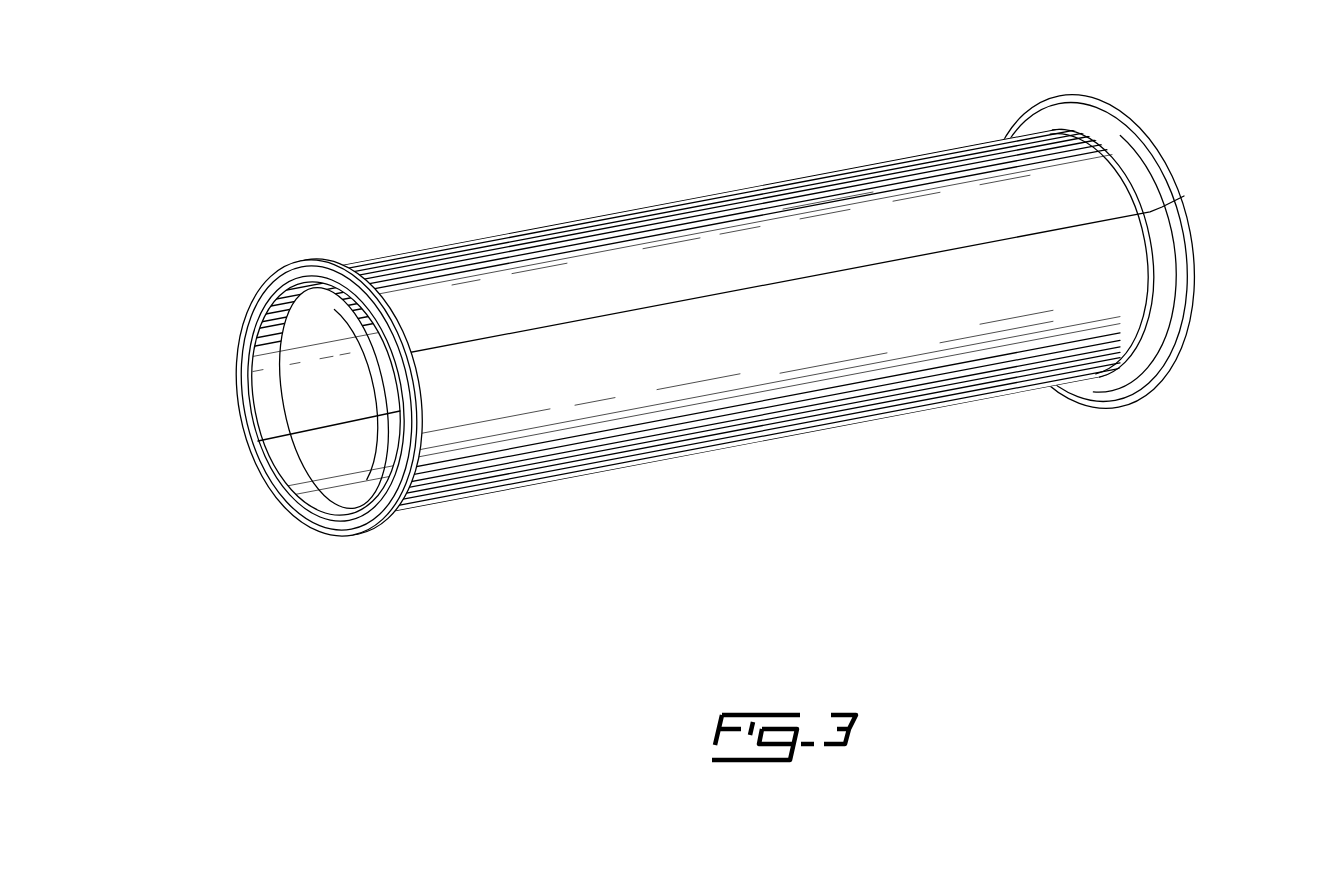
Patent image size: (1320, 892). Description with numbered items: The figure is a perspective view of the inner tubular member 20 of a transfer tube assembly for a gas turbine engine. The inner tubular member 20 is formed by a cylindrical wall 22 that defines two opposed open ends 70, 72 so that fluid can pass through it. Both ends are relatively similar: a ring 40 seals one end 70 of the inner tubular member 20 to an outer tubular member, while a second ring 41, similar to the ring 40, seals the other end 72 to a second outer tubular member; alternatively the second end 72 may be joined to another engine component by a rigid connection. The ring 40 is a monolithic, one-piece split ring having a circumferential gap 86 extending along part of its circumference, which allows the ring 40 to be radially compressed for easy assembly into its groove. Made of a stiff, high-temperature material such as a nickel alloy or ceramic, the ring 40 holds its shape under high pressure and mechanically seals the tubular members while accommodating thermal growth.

The inner tubular member 20 is at (742, 317).
The cylindrical wall 22 is at (638, 230).
The ring 40 is at (368, 300).
The second ring 41 is at (1152, 162).
The end 70 is at (297, 367).
The second end 72 is at (803, 298).
The circumferential gap 86 is at (399, 382).